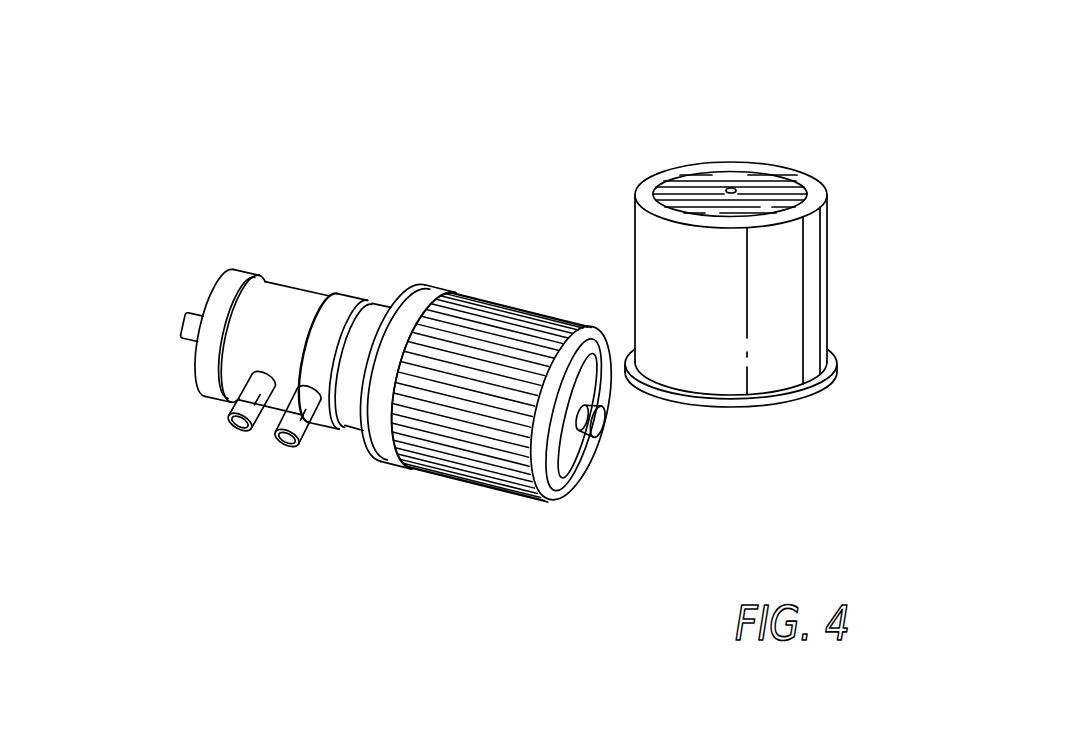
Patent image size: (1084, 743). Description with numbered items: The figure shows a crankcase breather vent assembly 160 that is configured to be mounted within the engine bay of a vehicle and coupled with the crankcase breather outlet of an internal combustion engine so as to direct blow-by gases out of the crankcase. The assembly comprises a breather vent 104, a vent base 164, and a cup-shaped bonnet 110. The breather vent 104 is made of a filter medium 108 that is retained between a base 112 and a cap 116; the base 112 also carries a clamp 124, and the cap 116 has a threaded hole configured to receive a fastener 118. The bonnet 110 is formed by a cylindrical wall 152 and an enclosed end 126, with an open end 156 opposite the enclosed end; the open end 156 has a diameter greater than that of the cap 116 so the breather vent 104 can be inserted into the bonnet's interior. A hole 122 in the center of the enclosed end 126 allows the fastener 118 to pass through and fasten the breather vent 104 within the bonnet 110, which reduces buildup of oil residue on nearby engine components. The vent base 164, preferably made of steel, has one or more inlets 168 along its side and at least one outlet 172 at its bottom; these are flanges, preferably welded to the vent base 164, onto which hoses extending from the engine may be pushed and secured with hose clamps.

The breather vent 104 is at (483, 530).
The filter medium 108 is at (500, 300).
The bonnet 110 is at (785, 123).
The base 112 is at (413, 295).
The cap 116 is at (560, 505).
The fastener 118 is at (598, 425).
The hole 122 is at (730, 189).
The clamp 124 is at (350, 298).
The enclosed end 126 is at (668, 186).
The cylindrical wall 152 is at (825, 294).
The open end 156 is at (747, 443).
The crankcase breather vent assembly 160 is at (378, 97).
The vent base 164 is at (230, 228).
The inlets 168 is at (247, 403).
The outlet 172 is at (185, 327).